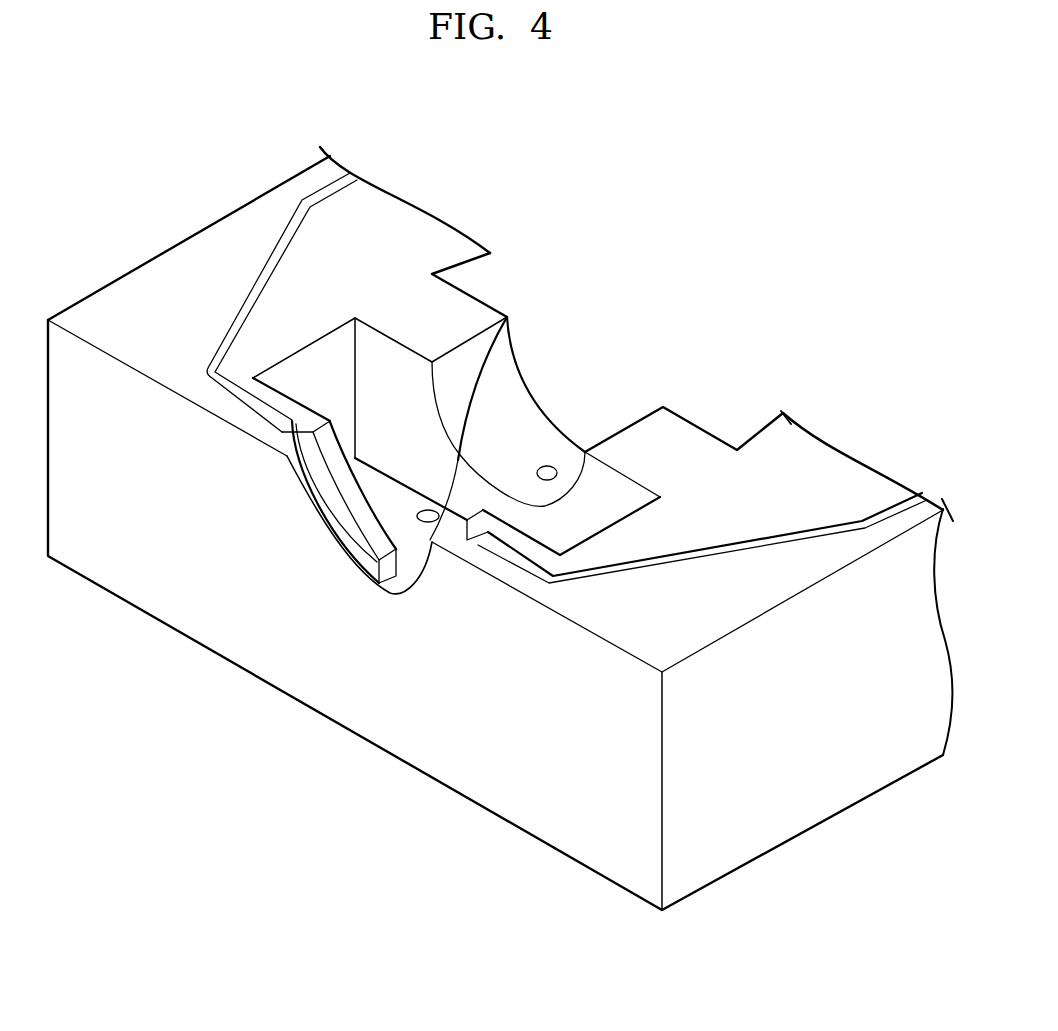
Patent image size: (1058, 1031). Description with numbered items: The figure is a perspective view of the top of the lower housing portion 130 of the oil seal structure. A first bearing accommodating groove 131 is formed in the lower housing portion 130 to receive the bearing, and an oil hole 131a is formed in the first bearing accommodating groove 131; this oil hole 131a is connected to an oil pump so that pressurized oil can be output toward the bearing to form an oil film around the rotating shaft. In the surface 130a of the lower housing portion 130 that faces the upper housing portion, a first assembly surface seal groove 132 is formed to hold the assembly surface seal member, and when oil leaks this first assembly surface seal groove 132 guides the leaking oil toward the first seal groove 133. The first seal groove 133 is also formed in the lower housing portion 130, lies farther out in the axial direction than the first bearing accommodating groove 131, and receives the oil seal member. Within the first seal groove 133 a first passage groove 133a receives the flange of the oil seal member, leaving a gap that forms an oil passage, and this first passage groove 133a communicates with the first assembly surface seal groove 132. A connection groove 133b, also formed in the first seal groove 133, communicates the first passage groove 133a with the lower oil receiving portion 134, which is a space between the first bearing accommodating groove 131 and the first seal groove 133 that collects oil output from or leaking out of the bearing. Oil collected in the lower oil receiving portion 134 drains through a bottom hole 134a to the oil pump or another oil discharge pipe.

The lower housing portion 130 is at (142, 228).
The surface 130a is at (372, 218).
The first bearing accommodating groove 131 is at (510, 385).
The oil hole 131a is at (557, 470).
The first assembly surface seal groove 132 is at (275, 257).
The first seal groove 133 is at (368, 533).
The first passage groove 133a is at (287, 456).
The connection groove 133b is at (405, 582).
The lower oil receiving portion 134 is at (397, 356).
The bottom hole 134a is at (507, 317).